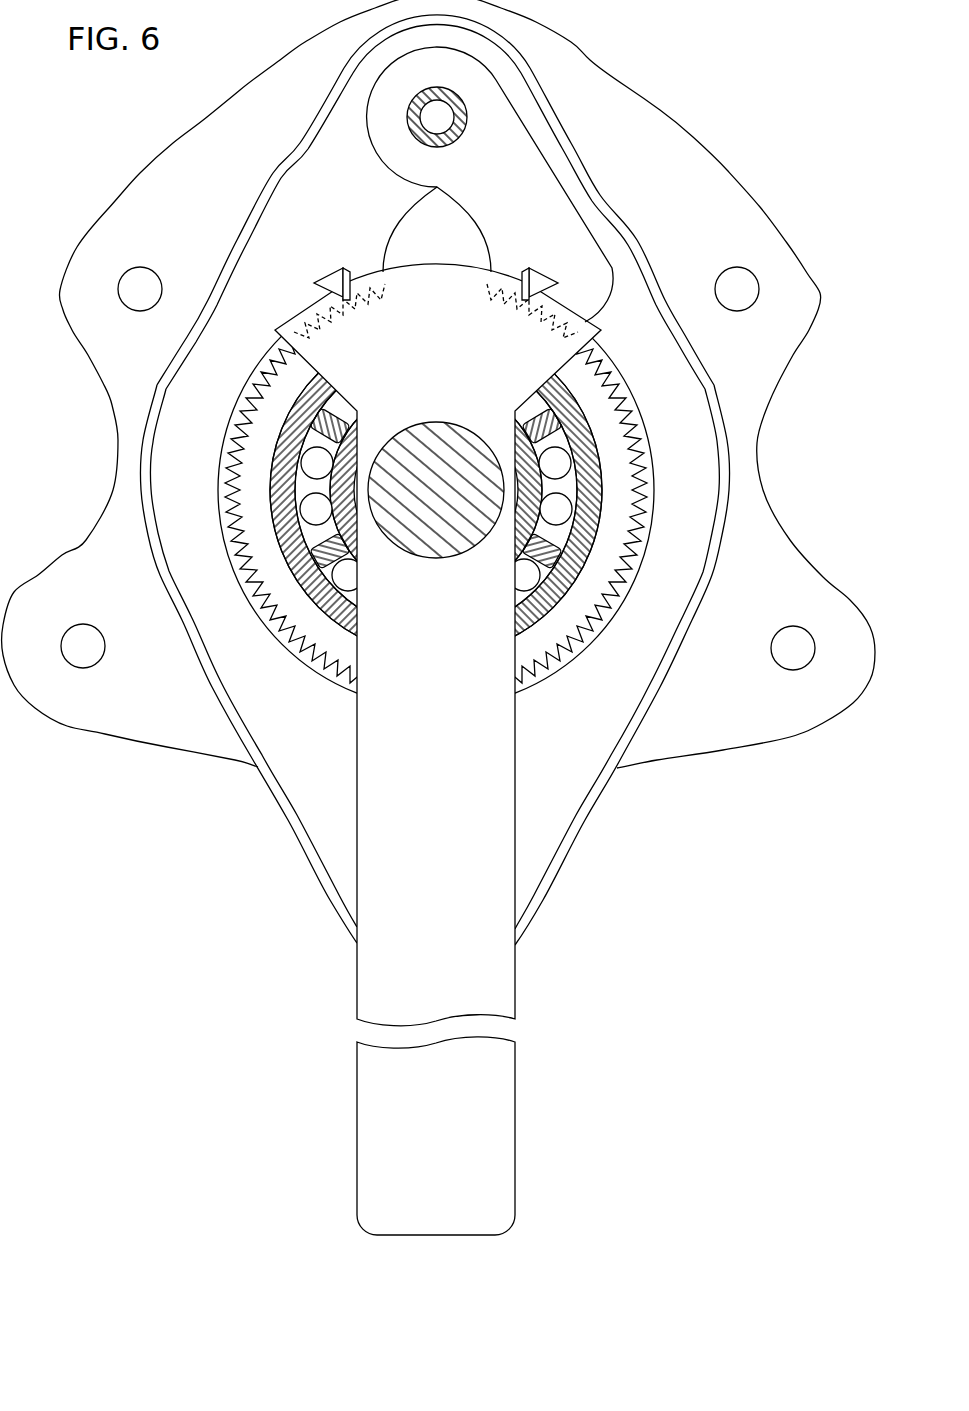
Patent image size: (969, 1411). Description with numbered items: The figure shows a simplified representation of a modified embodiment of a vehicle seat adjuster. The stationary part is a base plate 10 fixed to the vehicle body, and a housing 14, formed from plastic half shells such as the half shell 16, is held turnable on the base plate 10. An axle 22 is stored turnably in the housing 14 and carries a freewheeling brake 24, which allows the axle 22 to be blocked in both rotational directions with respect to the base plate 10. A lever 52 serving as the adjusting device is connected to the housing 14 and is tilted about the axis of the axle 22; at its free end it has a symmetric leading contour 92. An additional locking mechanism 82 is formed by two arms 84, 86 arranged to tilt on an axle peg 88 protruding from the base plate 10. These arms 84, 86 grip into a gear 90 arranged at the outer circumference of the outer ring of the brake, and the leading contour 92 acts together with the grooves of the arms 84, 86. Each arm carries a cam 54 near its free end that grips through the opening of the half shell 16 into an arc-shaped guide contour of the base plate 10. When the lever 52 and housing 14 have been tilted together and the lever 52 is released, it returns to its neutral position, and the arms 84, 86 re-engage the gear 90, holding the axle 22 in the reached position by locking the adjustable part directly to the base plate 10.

The base plate 10 is at (798, 544).
The housing 14 is at (297, 856).
The half shell 16 is at (562, 858).
The axle 22 is at (423, 540).
The freewheeling brake 24 is at (288, 410).
The lever 52 is at (510, 1075).
The cam 54 is at (328, 270).
The additional locking mechanism 82 is at (582, 137).
The arm 84 is at (316, 190).
The arm 86 is at (550, 180).
The axle peg 88 is at (453, 143).
The gear 90 is at (609, 580).
The leading contour 92 is at (367, 277).